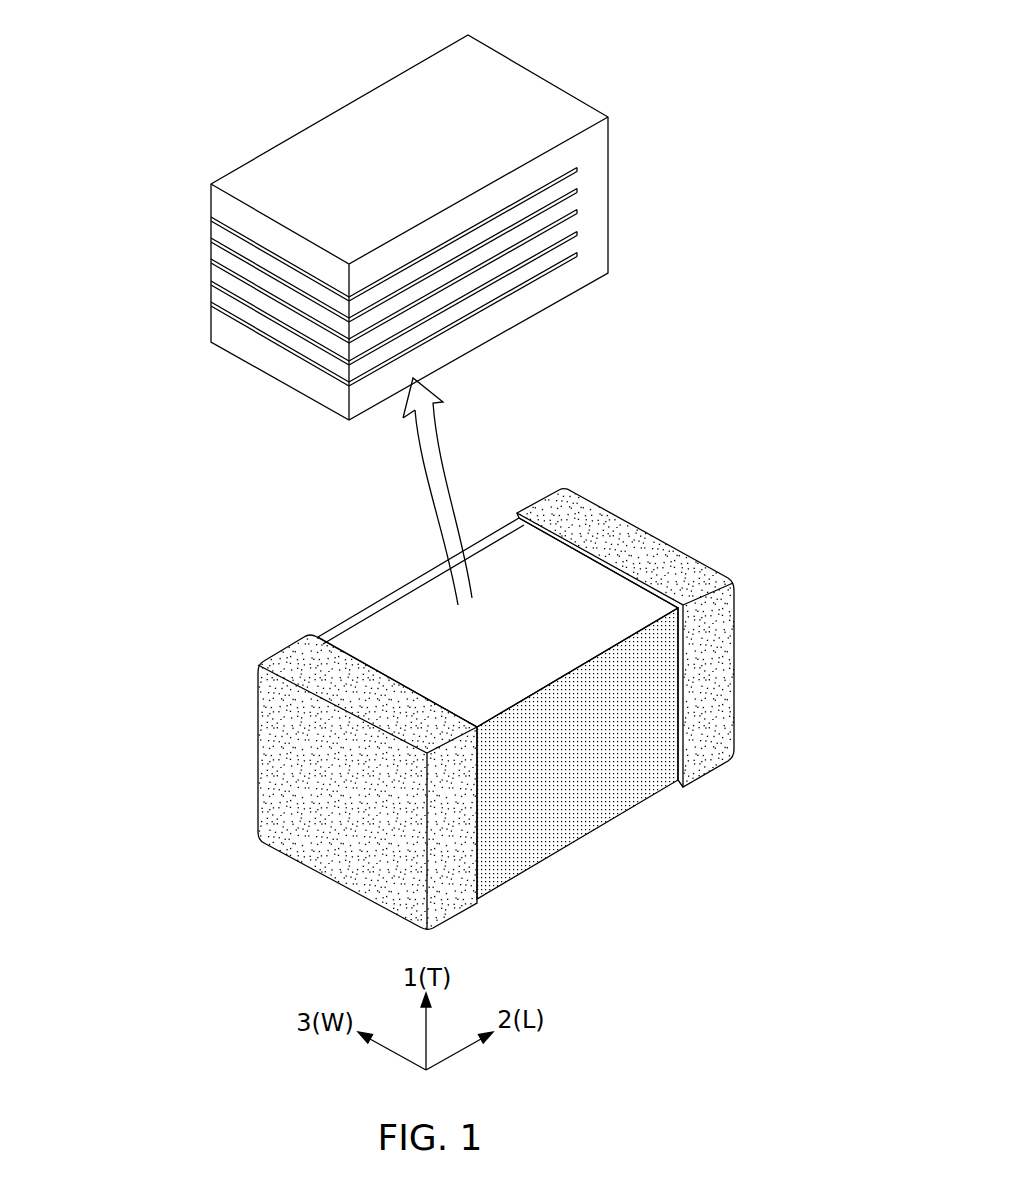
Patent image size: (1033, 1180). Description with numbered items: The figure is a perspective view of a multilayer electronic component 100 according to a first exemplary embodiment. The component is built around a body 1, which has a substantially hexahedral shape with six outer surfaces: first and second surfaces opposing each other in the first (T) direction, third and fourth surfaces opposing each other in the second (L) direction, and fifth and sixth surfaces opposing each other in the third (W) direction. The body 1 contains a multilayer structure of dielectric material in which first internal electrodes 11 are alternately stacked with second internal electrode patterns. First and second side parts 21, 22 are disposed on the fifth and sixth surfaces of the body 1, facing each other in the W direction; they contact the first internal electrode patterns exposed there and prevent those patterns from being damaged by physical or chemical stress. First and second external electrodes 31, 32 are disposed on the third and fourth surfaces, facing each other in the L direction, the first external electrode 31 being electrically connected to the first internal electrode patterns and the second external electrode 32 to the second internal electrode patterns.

The multilayer electronic component 100 is at (443, 470).
The body 1 is at (443, 455).
The first internal electrode 11 is at (222, 229).
The first side part 21 is at (611, 809).
The second side part 22 is at (412, 590).
The first external electrode 31 is at (270, 735).
The second external electrode 32 is at (617, 528).